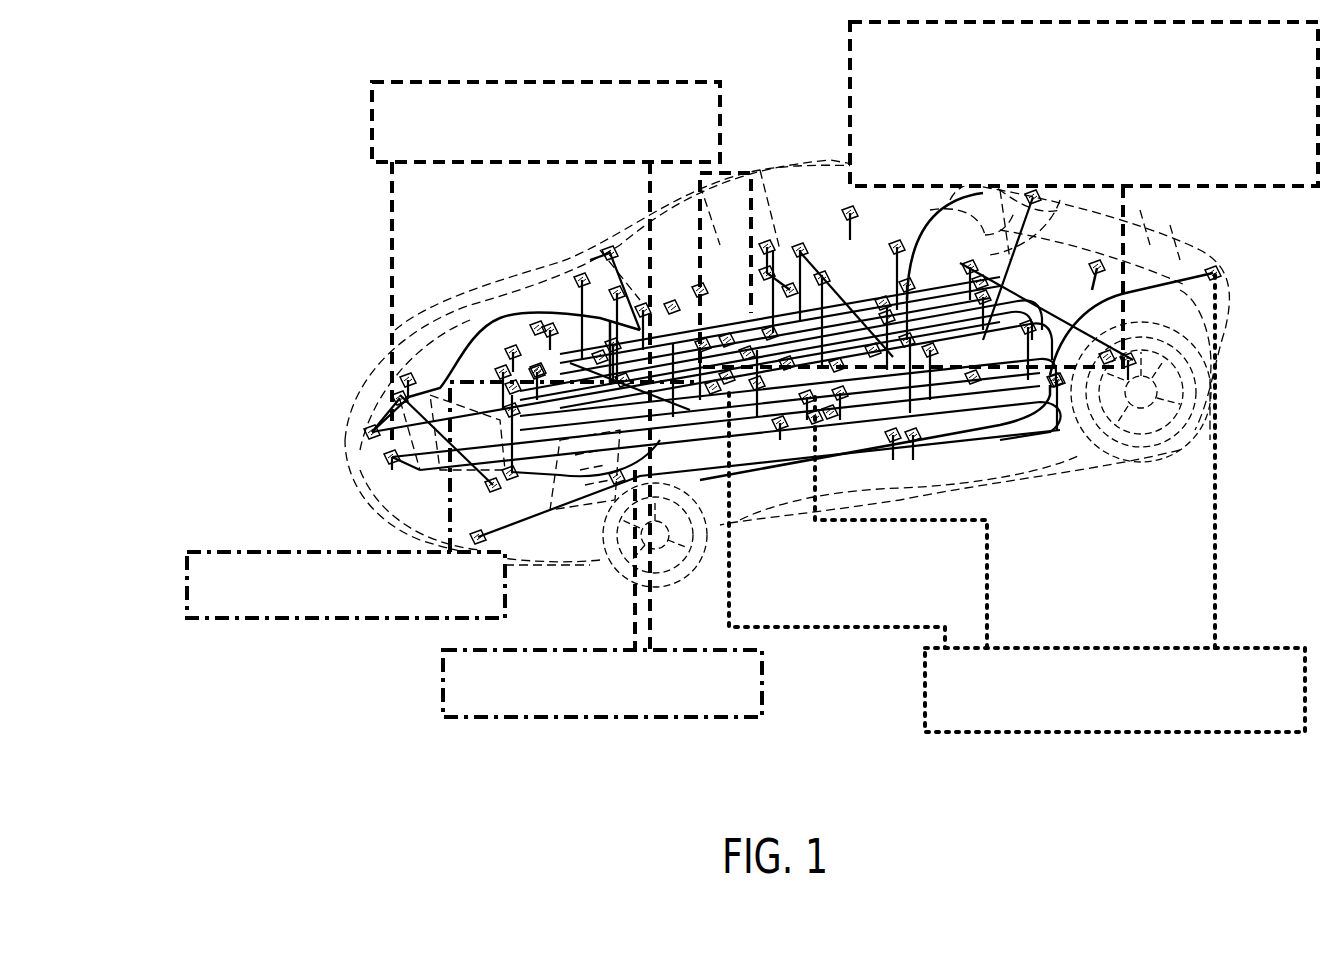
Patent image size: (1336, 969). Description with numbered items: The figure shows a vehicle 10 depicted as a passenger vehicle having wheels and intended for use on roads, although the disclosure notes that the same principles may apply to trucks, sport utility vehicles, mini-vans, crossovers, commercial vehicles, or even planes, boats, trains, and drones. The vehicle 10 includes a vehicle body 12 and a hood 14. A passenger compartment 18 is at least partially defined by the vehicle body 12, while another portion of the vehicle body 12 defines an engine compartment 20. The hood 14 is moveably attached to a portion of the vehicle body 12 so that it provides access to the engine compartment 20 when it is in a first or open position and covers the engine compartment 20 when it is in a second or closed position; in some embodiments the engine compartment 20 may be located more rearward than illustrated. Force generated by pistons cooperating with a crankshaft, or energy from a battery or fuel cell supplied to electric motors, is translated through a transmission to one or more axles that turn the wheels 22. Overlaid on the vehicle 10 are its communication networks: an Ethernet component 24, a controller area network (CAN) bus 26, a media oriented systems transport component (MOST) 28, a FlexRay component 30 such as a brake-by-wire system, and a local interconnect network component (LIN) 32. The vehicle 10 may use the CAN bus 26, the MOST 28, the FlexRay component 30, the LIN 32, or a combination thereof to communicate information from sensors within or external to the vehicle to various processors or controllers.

The vehicle 10 is at (152, 172).
The vehicle body 12 is at (878, 352).
The hood 14 is at (485, 310).
The passenger compartment 18 is at (650, 255).
The engine compartment 20 is at (320, 388).
The wheels 22 is at (600, 545).
The Ethernet component 24 is at (150, 585).
The controller area network (CAN) bus 26 is at (338, 116).
The media oriented systems transport component (MOST) 28 is at (828, 94).
The FlexRay component 30 is at (400, 683).
The local interconnect network component (LIN) 32 is at (895, 684).